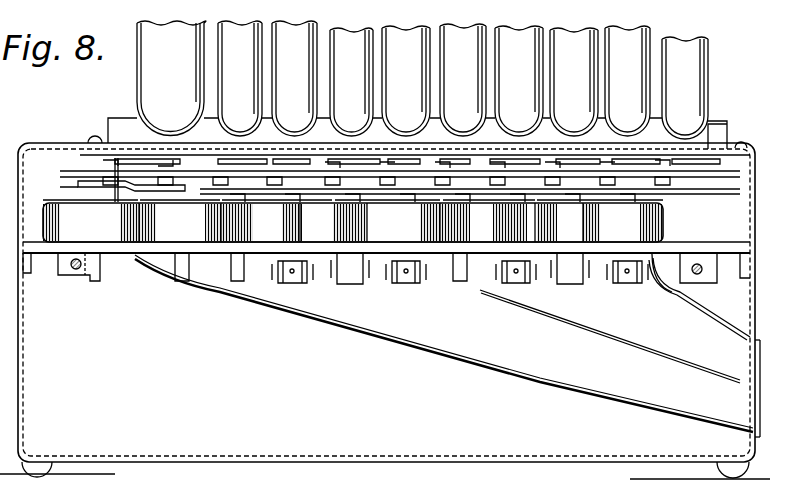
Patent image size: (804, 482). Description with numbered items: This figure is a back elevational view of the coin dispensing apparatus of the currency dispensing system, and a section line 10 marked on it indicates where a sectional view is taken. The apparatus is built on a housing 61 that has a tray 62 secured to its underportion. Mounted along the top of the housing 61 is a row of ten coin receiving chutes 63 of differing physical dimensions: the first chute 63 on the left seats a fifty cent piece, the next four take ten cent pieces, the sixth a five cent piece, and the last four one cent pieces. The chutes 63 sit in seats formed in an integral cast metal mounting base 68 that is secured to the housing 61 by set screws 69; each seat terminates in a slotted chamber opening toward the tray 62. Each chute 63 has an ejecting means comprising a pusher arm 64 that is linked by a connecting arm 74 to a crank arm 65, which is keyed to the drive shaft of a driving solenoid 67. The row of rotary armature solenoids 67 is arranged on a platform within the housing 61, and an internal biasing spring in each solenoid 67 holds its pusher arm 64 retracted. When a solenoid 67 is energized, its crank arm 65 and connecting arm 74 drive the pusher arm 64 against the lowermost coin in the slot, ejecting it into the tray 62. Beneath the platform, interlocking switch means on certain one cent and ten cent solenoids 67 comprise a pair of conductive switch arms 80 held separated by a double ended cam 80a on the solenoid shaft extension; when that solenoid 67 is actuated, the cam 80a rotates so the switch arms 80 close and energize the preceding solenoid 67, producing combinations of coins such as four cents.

The section line 10 is at (637, 30).
The housing 61 is at (22, 150).
The tray 62 is at (445, 340).
The coin receiving chutes 63 is at (150, 85).
The pusher arm 64 is at (232, 152).
The crank arm 65 is at (105, 185).
The driving solenoid 67 is at (128, 243).
The mounting base 68 is at (716, 128).
The set screws 69 is at (95, 136).
The connecting arm 74 is at (178, 173).
The switch arms 80 is at (426, 283).
The double ended cam 80a is at (400, 283).